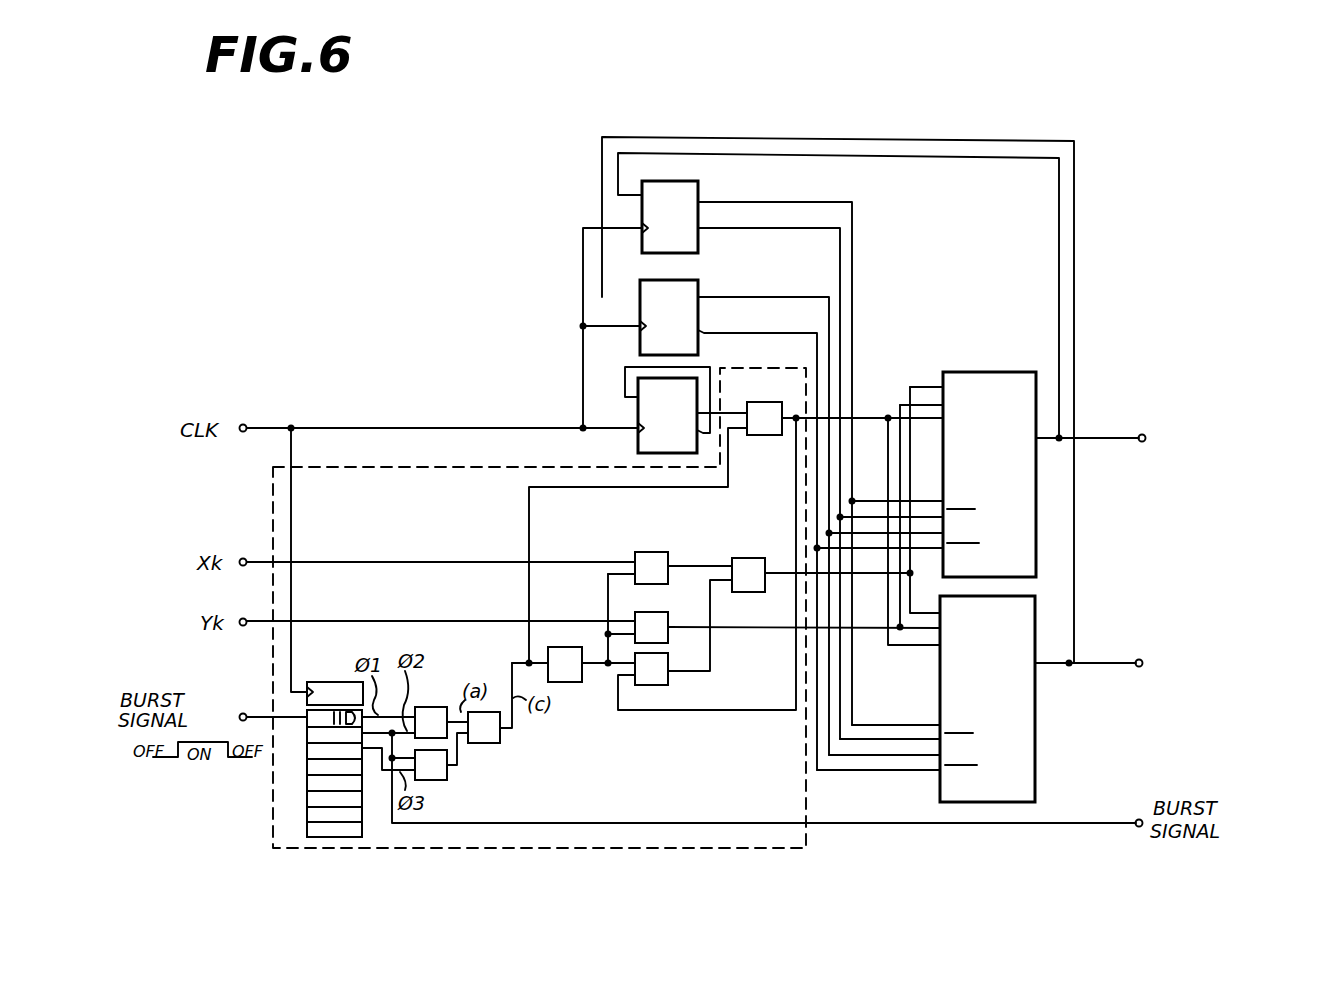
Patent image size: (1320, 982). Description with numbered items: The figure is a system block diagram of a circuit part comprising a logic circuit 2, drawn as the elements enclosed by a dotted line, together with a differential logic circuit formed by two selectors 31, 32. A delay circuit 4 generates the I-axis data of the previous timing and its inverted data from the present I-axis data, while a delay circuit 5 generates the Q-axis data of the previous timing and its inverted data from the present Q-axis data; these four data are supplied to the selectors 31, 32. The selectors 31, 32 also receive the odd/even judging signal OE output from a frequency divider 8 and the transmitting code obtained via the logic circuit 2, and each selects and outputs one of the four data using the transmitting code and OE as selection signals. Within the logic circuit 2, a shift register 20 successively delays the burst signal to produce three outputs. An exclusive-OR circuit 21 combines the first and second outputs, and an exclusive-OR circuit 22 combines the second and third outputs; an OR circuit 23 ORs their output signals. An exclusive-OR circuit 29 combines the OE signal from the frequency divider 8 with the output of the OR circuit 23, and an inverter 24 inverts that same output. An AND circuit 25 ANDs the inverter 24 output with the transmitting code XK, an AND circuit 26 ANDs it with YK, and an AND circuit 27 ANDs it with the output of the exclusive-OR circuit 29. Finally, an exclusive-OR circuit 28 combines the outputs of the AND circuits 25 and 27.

The logic circuit 2 is at (383, 467).
The delay circuit 4 is at (699, 181).
The delay circuit 5 is at (697, 283).
The frequency divider 8 is at (637, 396).
The shift register 20 is at (327, 682).
The exclusive-OR circuit 21 is at (432, 707).
The exclusive-OR circuit 22 is at (440, 780).
The OR circuit 23 is at (500, 740).
The inverter 24 is at (568, 682).
The AND circuit 25 is at (648, 552).
The AND circuit 26 is at (646, 612).
The AND circuit 27 is at (655, 685).
The exclusive-OR circuit 28 is at (745, 558).
The exclusive-OR circuit 29 is at (762, 436).
The selector 31 is at (958, 372).
The selector 32 is at (1035, 733).